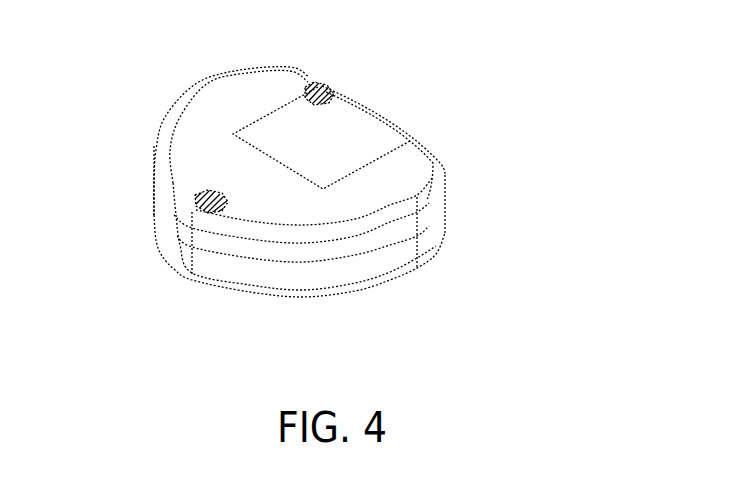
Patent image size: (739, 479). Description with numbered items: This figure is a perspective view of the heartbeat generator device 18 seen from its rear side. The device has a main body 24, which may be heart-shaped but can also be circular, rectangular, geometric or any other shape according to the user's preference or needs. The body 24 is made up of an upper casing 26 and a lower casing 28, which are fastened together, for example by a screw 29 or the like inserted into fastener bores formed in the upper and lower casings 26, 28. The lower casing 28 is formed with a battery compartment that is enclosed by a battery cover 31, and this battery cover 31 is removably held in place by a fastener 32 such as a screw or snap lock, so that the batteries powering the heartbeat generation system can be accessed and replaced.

The heartbeat generator device 18 is at (516, 129).
The main body 24 is at (182, 98).
The upper casing 26 is at (363, 265).
The lower casing 28 is at (380, 180).
The screw 29 is at (200, 197).
The battery cover 31 is at (363, 137).
The fastener 32 is at (325, 87).